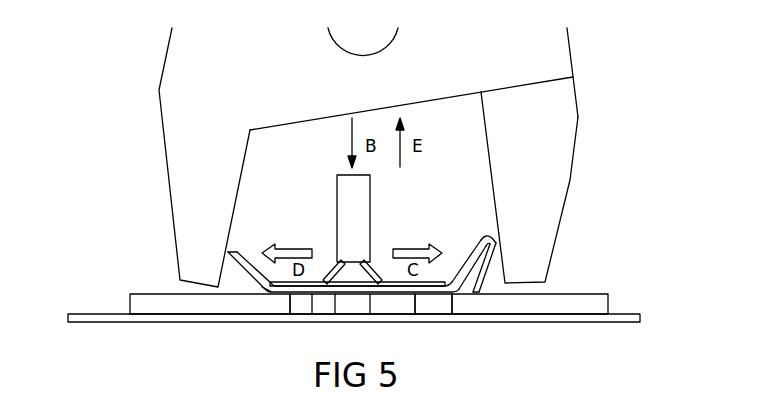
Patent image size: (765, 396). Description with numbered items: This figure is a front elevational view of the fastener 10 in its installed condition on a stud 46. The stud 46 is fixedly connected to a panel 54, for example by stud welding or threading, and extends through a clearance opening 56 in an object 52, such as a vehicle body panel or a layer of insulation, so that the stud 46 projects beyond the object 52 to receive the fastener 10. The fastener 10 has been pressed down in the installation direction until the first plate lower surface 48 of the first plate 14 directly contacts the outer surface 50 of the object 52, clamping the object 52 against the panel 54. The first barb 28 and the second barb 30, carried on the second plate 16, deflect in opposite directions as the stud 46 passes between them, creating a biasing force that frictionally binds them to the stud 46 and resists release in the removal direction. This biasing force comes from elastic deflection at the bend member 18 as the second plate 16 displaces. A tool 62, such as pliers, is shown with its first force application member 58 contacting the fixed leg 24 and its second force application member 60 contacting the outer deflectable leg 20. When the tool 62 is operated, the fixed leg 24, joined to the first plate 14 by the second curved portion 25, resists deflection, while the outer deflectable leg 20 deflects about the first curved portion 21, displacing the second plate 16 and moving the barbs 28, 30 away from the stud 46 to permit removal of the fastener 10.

The fastener 10 is at (405, 273).
The first plate 14 is at (312, 290).
The second plate 16 is at (448, 270).
The bend member 18 is at (500, 240).
The outer deflectable leg 20 is at (494, 268).
The first curved portion 21 is at (475, 299).
The fixed leg 24 is at (235, 250).
The second curved portion 25 is at (254, 298).
The first barb 28 is at (378, 263).
The second barb 30 is at (328, 266).
The stud 46 is at (370, 195).
The first plate lower surface 48 is at (401, 305).
The outer surface 50 is at (596, 282).
The object 52 is at (145, 297).
The panel 54 is at (92, 323).
The clearance opening 56 is at (295, 308).
The first force application member 58 is at (177, 130).
The second force application member 60 is at (556, 134).
The tool 62 is at (566, 65).